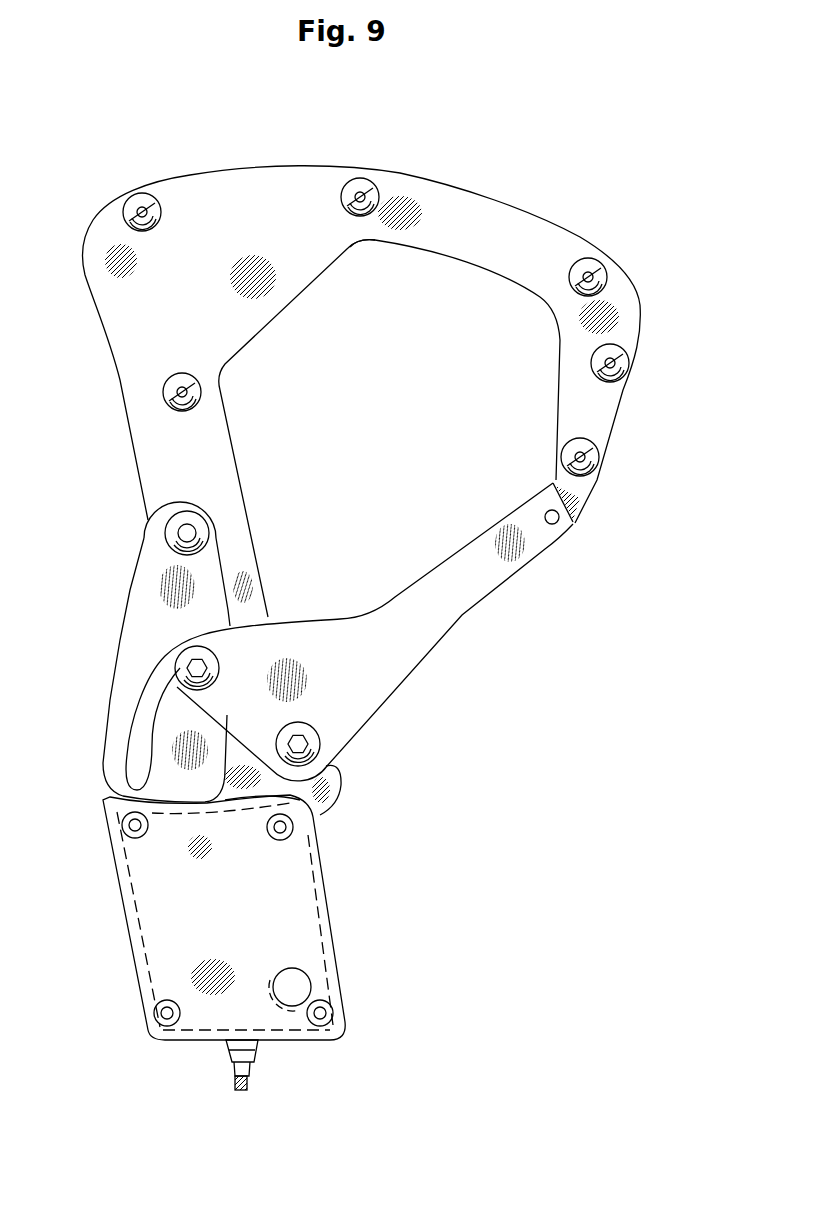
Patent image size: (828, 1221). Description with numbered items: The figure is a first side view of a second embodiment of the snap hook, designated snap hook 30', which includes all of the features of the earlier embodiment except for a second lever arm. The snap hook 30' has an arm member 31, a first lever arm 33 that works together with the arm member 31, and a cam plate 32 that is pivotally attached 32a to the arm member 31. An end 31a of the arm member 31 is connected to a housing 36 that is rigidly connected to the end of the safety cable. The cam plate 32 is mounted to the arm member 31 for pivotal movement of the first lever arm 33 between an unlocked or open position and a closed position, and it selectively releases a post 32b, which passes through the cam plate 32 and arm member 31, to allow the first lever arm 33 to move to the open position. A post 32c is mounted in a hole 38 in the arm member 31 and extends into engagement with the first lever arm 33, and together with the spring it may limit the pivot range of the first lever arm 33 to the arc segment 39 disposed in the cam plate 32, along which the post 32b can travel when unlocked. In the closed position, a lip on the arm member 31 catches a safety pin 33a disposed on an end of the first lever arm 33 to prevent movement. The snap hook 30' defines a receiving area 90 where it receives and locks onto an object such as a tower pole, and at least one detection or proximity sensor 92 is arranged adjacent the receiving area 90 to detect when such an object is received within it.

The snap hook 30' is at (620, 182).
The arm member 31 is at (636, 331).
The end of the arm member 31a is at (322, 813).
The cam plate 32 is at (135, 617).
The pivotal attachment 32a is at (165, 534).
The post 32b is at (207, 656).
The post 32c is at (315, 743).
The first lever arm 33 is at (452, 608).
The safety pin 33a is at (559, 520).
The housing 36 is at (130, 913).
The hole 38 is at (303, 723).
The arc segment 39 is at (130, 753).
The receiving area 90 is at (527, 420).
The detection or proximity sensor 92 is at (353, 240).